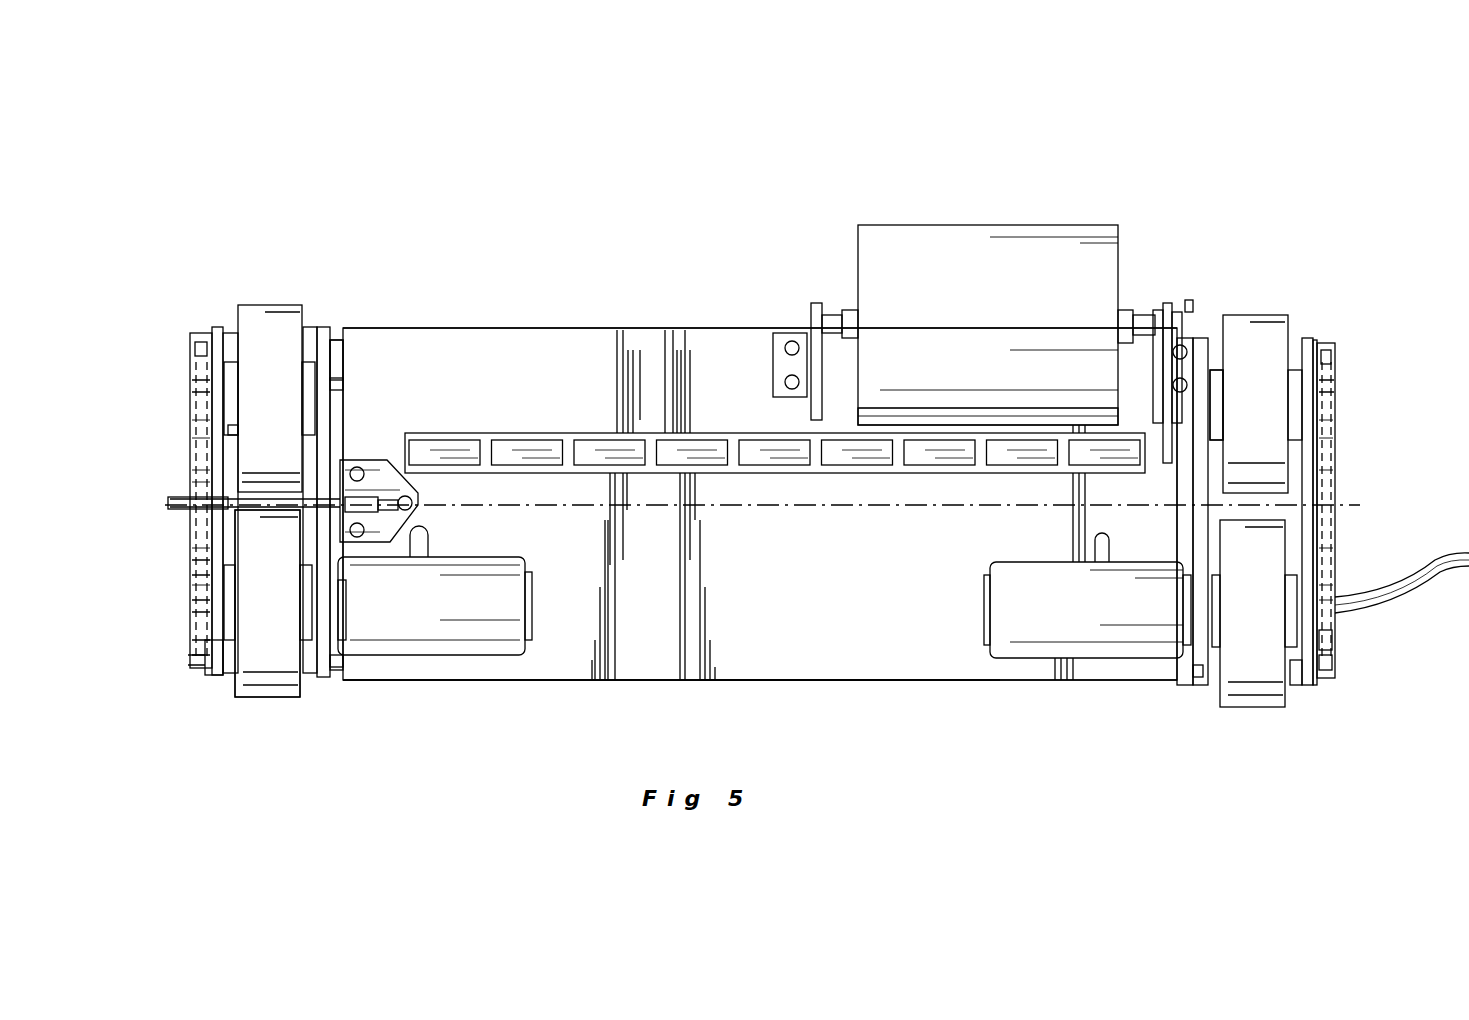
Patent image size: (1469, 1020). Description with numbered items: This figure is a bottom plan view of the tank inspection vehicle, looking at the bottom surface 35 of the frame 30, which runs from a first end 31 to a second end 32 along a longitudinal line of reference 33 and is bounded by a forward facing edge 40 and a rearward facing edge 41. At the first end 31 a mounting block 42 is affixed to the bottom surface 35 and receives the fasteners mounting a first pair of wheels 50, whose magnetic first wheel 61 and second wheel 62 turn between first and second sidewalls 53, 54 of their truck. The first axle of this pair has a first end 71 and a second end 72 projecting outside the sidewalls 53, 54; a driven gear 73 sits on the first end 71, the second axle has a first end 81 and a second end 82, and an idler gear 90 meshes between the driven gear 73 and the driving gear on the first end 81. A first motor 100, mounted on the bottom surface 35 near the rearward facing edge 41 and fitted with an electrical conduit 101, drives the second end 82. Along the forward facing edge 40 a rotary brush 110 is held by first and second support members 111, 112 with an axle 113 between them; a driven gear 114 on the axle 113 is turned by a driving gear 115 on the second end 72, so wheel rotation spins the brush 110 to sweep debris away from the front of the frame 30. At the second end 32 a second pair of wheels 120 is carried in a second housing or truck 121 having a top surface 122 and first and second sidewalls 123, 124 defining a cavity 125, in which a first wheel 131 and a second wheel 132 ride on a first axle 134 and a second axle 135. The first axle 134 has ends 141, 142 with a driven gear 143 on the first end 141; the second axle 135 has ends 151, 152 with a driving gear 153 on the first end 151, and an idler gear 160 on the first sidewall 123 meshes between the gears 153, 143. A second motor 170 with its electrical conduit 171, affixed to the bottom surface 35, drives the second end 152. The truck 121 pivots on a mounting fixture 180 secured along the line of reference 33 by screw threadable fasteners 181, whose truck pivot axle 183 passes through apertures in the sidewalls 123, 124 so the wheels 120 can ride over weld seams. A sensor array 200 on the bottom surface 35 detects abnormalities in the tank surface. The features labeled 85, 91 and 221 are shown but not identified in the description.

The frame 30 is at (585, 375).
The first end 31 is at (1155, 681).
The second end 32 is at (358, 345).
The longitudinal line of reference 33 is at (805, 512).
The bottom surface 35 is at (850, 630).
The forward facing edge 40 is at (663, 328).
The rearward facing edge 41 is at (740, 683).
The mounting block 42 is at (1183, 522).
The first pair of wheels 50 is at (1323, 508).
The first sidewall 53 is at (1200, 340).
The second sidewall 54 is at (1310, 345).
The first wheel 61 is at (1268, 369).
The second wheel 62 is at (1262, 595).
The first end 71 is at (1336, 430).
The second end 72 is at (1212, 412).
The driven gear 73 is at (1340, 378).
The first end 81 is at (1340, 642).
The second end 82 is at (1195, 598).
The wheel retainer 85 is at (1294, 690).
The idler gear 90 is at (1340, 485).
The cable sheath 91 is at (1336, 545).
The first motor 100 is at (1089, 591).
The electrical conduit 101 is at (1100, 545).
The rotary brush 110 is at (947, 323).
The first support member 111 is at (1150, 373).
The second support member 112 is at (815, 318).
The axle 113 is at (832, 325).
The driven gear 114 is at (1167, 310).
The driving gear 115 is at (1165, 470).
The second pair of wheels 120 is at (273, 506).
The second housing or truck 121 is at (248, 722).
The top surface 122 is at (307, 676).
The first sidewall 123 is at (322, 678).
The second sidewall 124 is at (212, 676).
The cavity 125 is at (314, 325).
The first wheel 131 is at (286, 382).
The second wheel 132 is at (286, 587).
The first axle 134 is at (188, 381).
The second axle 135 is at (190, 603).
The first end 141 is at (188, 392).
The second end 142 is at (373, 353).
The driven gear 143 is at (203, 352).
The first end 151 is at (190, 568).
The second end 152 is at (332, 583).
The driving gear 153 is at (185, 636).
The idler gear 160 is at (190, 518).
The second motor 170 is at (432, 590).
The electrical conduit 171 is at (430, 548).
The mounting fixture 180 is at (426, 468).
The screw threadable fasteners 181 is at (358, 466).
The truck pivot axle 183 is at (268, 498).
The sensor array 200 is at (565, 410).
The fastener 221 is at (1183, 748).